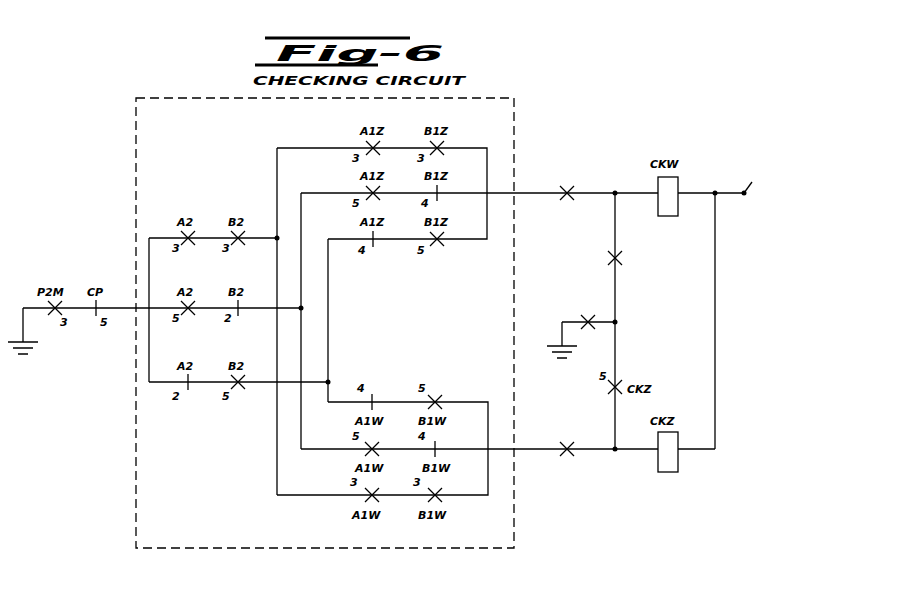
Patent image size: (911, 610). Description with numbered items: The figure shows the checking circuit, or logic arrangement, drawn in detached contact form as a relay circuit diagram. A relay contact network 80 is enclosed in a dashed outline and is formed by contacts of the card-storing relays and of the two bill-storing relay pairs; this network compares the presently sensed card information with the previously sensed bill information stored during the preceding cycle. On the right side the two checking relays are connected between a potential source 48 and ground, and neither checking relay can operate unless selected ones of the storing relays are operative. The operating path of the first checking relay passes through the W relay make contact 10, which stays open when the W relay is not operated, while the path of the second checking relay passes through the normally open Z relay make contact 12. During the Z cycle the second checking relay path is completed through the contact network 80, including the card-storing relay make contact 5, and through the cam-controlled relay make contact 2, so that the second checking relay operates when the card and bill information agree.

The contact network 80 is at (516, 127).
The potential source 48 is at (769, 185).
The 10MW contact 10 is at (558, 192).
The 12MZ contact 12 is at (557, 449).
The 5MA2 contact 5 is at (627, 265).
The 2MP2M contact 2 is at (582, 316).